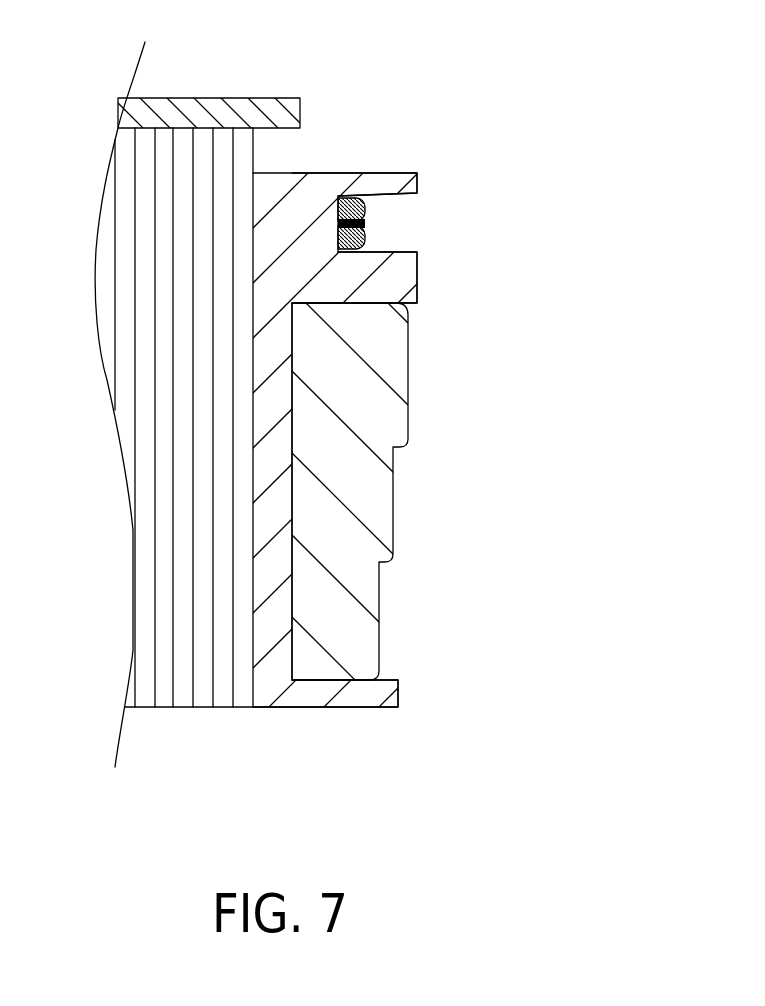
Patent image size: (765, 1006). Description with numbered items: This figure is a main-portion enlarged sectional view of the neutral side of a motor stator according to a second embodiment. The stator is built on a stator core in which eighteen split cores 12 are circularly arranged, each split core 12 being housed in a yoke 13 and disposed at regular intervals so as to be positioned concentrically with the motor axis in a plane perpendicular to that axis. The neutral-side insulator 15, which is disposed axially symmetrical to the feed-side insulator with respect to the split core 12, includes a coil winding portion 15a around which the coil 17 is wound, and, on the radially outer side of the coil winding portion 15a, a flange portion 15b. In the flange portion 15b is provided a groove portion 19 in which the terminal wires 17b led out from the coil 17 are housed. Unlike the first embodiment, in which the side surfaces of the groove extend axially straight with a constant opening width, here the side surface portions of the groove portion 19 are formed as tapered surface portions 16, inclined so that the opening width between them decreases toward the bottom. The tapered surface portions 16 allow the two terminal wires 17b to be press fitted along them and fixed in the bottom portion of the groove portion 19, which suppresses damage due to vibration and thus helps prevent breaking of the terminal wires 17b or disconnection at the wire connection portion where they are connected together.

The split core 12 is at (197, 692).
The yoke 13 is at (197, 115).
The neutral-side insulator 15 is at (304, 181).
The coil winding portion 15a is at (315, 692).
The flange portion 15b is at (348, 182).
The tapered surface portion 16 is at (403, 193).
The coil 17 is at (388, 523).
The terminal wire 17b is at (365, 237).
The groove portion 19 is at (395, 222).